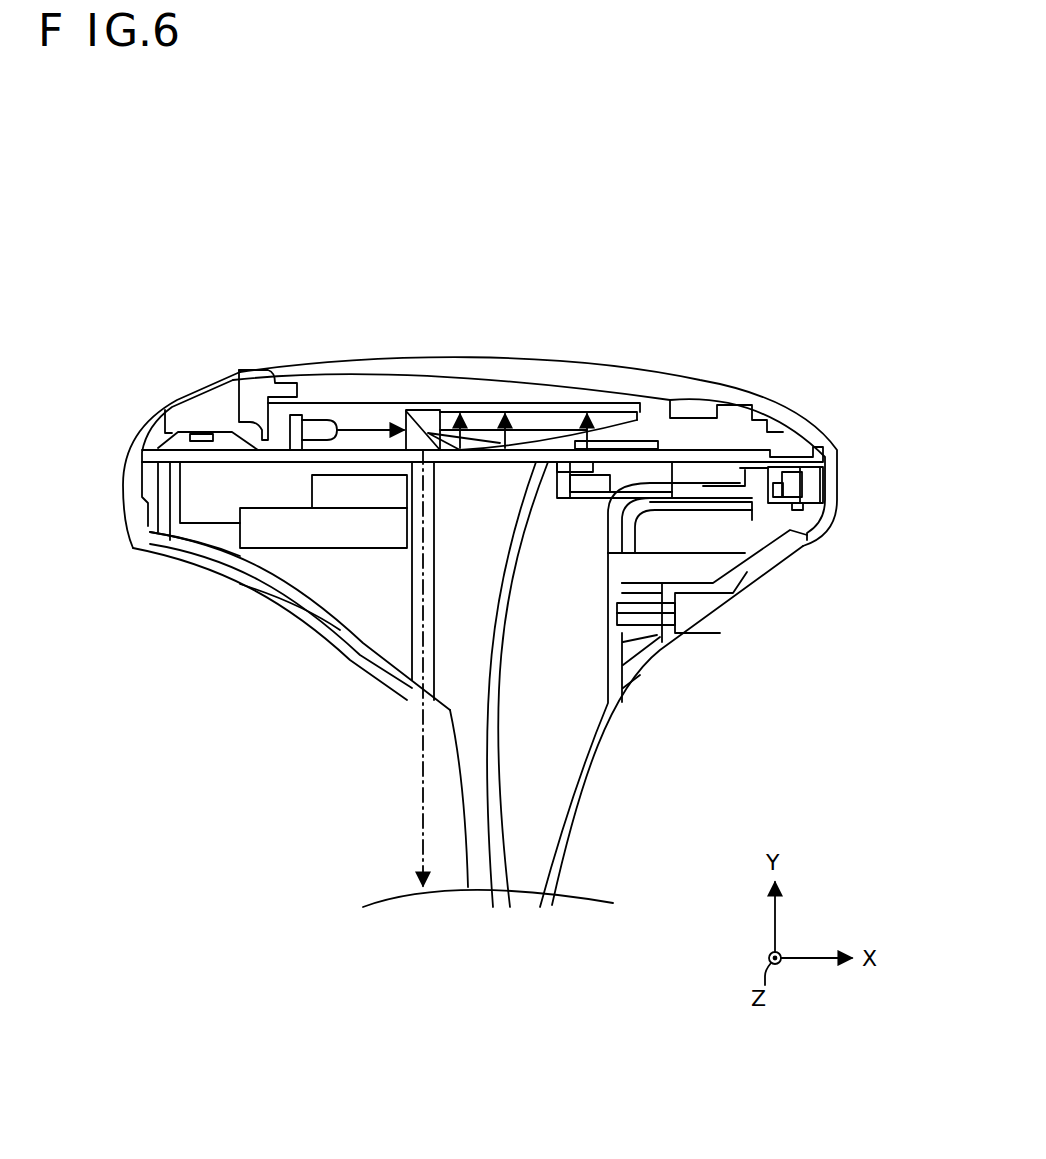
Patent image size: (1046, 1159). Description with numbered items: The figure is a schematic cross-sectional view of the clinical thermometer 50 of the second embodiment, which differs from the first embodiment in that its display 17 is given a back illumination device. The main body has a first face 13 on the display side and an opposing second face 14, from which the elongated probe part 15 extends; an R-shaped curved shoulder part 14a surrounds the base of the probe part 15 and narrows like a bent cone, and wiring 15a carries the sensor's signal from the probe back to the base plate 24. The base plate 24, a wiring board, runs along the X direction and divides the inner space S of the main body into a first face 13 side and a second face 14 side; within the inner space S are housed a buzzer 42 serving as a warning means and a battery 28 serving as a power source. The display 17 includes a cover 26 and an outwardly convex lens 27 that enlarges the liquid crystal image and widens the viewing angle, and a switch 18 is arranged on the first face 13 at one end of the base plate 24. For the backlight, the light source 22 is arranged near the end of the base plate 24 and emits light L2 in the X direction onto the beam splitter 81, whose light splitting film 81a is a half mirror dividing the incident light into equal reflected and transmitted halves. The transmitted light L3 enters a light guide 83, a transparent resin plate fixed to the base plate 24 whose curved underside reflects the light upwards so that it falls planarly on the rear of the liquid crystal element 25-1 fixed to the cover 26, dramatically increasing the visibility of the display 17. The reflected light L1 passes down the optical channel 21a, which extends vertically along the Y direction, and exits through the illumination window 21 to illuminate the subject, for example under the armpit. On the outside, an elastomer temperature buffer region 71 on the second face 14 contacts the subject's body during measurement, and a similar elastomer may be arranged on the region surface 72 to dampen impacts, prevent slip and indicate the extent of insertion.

The clinical thermometer 50 is at (702, 250).
The first face 13 is at (730, 389).
The display 17 is at (676, 354).
The switch 18 is at (172, 400).
The base plate 24 is at (223, 458).
The inner space S is at (187, 511).
The light source 22 is at (312, 418).
The cover 26 is at (363, 390).
The light L2 is at (343, 430).
The beam splitter 81 is at (415, 414).
The light splitting film 81a is at (420, 415).
The transmitted light L3 is at (480, 423).
The light guide 83 is at (497, 420).
The liquid crystal element 25-1 is at (550, 410).
The lens 27 is at (590, 366).
The buzzer 42 is at (293, 540).
The illumination window 21 is at (420, 700).
The reflected light L1 is at (422, 813).
The second face 14 is at (176, 555).
The shoulder part 14a is at (375, 655).
The optical channel 21a is at (372, 617).
The temperature buffer region 71 is at (340, 633).
The wiring 15a is at (560, 747).
The probe part 15 is at (574, 832).
The battery 28 is at (707, 473).
The region surface 72 is at (833, 533).